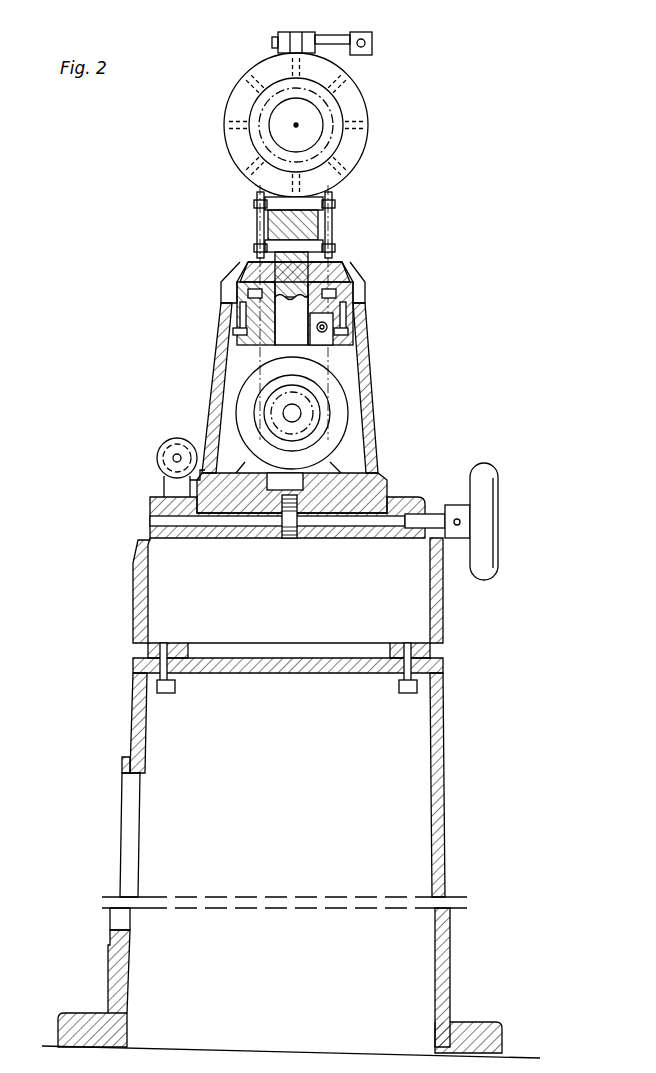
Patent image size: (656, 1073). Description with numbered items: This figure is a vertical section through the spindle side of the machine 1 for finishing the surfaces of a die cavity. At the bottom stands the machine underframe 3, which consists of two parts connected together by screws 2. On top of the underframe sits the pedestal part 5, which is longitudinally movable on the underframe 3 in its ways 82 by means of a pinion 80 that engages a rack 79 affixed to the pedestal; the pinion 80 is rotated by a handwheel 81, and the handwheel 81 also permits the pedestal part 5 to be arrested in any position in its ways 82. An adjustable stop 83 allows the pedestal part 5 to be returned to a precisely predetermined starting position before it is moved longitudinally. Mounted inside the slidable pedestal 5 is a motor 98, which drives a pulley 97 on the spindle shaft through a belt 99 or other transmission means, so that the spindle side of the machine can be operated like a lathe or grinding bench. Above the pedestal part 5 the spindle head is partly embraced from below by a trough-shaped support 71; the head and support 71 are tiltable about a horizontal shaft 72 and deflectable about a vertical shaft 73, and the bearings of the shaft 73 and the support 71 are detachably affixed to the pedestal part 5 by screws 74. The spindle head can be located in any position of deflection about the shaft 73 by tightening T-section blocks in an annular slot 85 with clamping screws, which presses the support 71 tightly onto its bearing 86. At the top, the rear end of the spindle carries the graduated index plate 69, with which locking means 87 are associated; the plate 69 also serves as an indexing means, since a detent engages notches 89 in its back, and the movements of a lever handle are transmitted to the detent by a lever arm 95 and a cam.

The machine 1 is at (504, 257).
The screws 2 is at (160, 668).
The machine underframe 3 is at (438, 797).
The pedestal part 5 is at (298, 408).
The graduated index plate 69 is at (300, 125).
The trough-shaped support 71 is at (347, 147).
The horizontal shaft 72 is at (363, 200).
The vertical shaft 73 is at (350, 295).
The screws 74 is at (242, 317).
The rack 79 is at (312, 473).
The pinion 80 is at (292, 540).
The handwheel 81 is at (488, 558).
The ways 82 is at (387, 507).
The adjustable stop 83 is at (160, 420).
The annular slot 85 is at (250, 290).
The bearing 86 is at (350, 287).
The locking means 87 is at (278, 50).
The notches 89 is at (227, 141).
The lever arm 95 is at (338, 47).
The pulley 97 is at (335, 115).
The motor 98 is at (243, 390).
The belt 99 is at (255, 225).